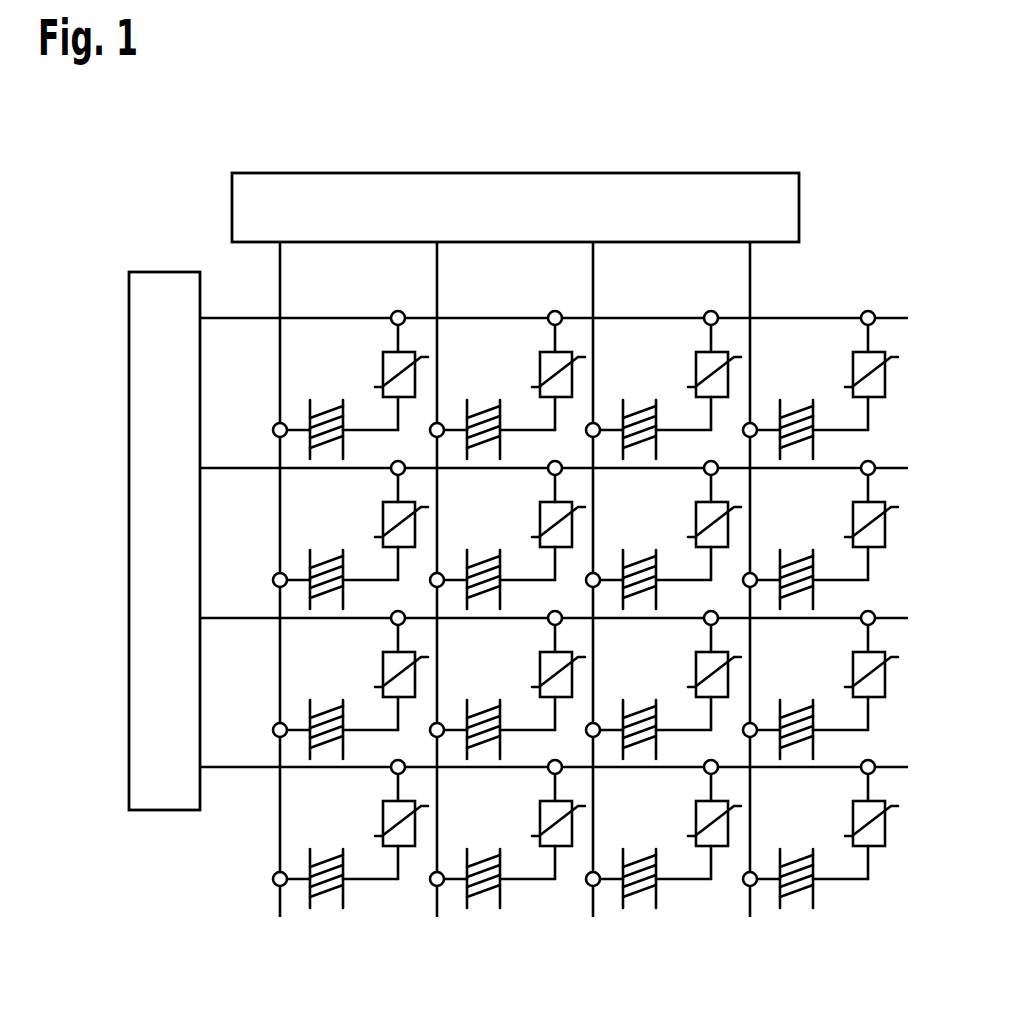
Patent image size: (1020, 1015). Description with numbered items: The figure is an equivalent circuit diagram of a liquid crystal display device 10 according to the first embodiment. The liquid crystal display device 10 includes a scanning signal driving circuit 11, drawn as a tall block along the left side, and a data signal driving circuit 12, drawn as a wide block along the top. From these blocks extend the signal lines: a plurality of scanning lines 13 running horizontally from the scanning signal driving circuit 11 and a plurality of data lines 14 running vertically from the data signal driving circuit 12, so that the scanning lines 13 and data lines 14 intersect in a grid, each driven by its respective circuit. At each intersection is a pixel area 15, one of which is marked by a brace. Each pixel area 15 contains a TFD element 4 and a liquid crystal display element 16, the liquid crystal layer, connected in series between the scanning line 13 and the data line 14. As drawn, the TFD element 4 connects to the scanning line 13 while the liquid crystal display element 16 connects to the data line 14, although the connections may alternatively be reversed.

The liquid crystal display device 10 is at (554, 589).
The scanning signal driving circuit 11 is at (168, 272).
The data signal driving circuit 12 is at (512, 173).
The scanning line 13 is at (233, 770).
The data line 14 is at (280, 295).
The pixel area 15 is at (588, 923).
The liquid crystal display element 16 is at (327, 903).
The TFD element 4 is at (407, 850).